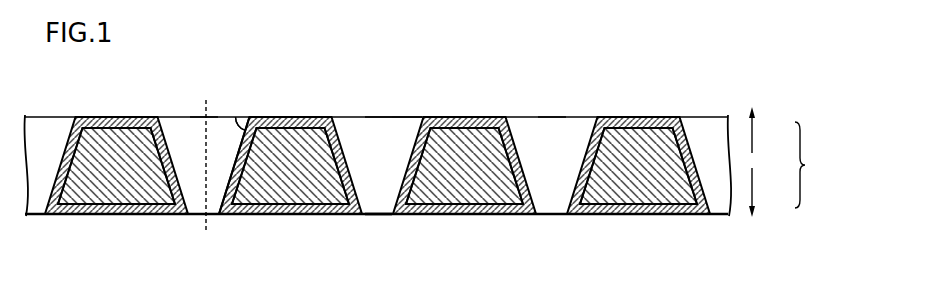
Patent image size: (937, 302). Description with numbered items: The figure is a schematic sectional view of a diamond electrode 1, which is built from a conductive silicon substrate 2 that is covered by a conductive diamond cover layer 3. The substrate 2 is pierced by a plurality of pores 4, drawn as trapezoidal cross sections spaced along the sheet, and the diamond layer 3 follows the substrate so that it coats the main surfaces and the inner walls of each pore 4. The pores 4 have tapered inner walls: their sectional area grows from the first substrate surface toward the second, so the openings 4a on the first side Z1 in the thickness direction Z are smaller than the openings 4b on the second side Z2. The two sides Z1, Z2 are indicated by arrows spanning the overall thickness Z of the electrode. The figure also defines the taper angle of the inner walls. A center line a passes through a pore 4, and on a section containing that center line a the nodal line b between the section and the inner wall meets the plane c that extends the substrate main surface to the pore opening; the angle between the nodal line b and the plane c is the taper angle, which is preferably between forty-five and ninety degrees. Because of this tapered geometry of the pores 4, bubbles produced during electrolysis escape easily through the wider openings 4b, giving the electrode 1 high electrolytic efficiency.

The diamond electrode 1 is at (714, 49).
The conductive silicon substrate 2 is at (301, 187).
The conductive diamond 3 is at (271, 206).
The pores 4 is at (369, 135).
The openings on first sides 4a is at (374, 216).
The openings on second sides 4b is at (398, 117).
The center line a is at (205, 177).
The nodal line b is at (228, 183).
The plane c is at (229, 117).
The thickness direction Z is at (807, 165).
The first side in the thickness direction Z1 is at (766, 192).
The second side in the thickness direction Z2 is at (766, 130).